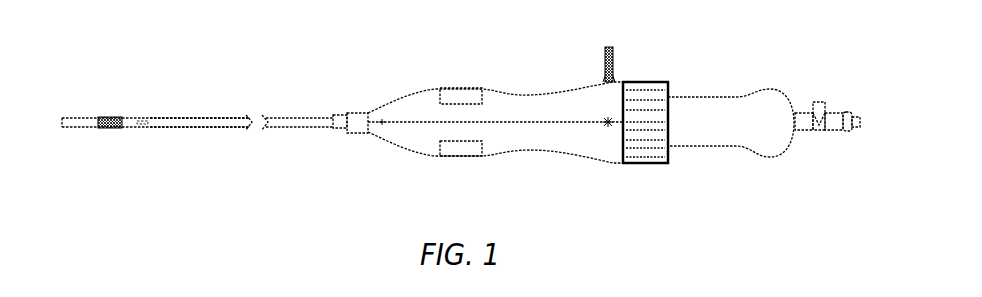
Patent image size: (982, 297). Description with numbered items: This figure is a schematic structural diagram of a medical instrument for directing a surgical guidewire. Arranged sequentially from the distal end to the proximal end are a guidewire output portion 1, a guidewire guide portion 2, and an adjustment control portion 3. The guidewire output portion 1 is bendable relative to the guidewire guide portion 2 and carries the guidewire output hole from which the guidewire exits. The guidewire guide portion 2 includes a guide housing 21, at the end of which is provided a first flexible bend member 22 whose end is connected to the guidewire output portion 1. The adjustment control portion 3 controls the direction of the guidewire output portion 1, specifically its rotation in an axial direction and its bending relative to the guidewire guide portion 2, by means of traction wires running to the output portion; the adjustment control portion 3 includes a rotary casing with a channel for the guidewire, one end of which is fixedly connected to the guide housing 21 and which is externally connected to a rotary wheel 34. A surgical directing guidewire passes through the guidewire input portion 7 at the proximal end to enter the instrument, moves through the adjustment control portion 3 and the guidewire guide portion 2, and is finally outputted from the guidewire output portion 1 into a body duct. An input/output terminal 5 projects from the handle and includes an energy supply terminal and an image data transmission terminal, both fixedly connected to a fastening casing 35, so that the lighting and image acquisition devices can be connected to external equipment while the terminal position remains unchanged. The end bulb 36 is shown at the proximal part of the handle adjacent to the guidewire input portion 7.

The guidewire output portion 1 is at (78, 135).
The guidewire guide portion 2 is at (218, 112).
The guide housing 21 is at (200, 123).
The first flexible bend member 22 is at (117, 123).
The adjustment control portion 3 is at (533, 162).
The rotary wheel 34 is at (460, 150).
The fastening casing 35 is at (500, 98).
The input/output terminal 5 is at (617, 57).
The handle end bulb 36 is at (752, 133).
The guidewire input portion 7 is at (825, 95).